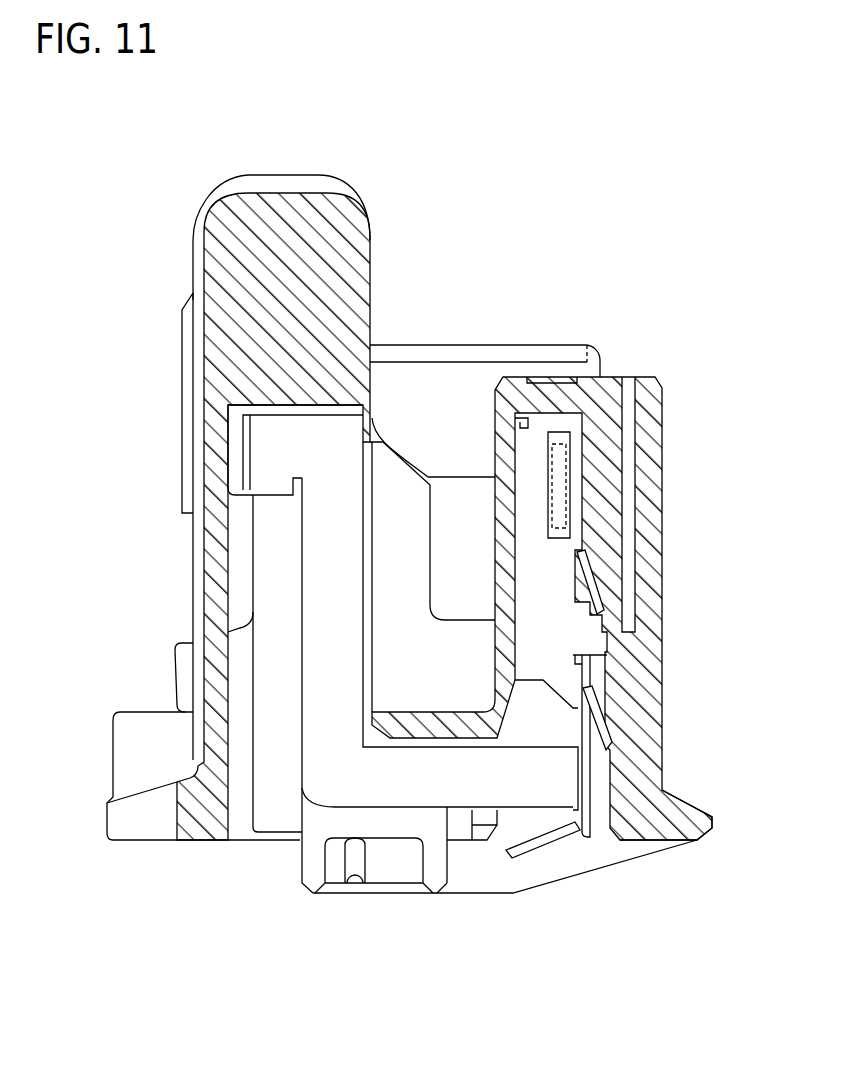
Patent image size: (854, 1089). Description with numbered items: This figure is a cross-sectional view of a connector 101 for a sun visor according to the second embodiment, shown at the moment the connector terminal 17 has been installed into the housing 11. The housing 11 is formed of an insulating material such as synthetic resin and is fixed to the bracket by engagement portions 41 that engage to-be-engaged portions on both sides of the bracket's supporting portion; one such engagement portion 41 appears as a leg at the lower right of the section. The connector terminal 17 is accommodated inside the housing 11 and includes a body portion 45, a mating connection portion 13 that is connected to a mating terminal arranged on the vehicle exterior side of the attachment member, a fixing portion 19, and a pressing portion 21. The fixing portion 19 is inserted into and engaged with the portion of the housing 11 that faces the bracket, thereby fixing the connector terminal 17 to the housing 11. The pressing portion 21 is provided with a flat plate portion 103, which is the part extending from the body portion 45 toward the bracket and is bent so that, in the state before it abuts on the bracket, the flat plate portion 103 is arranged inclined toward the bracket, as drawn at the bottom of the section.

The connector for a sun visor 101 is at (449, 175).
The housing 11 is at (557, 345).
The mating connection portion 13 is at (555, 540).
The connector terminal 17 is at (353, 410).
The fixing portion 19 is at (228, 412).
The pressing portion 21 is at (500, 853).
The engagement portion 41 is at (673, 820).
The body portion 45 is at (323, 572).
The flat plate portion 103 is at (530, 850).